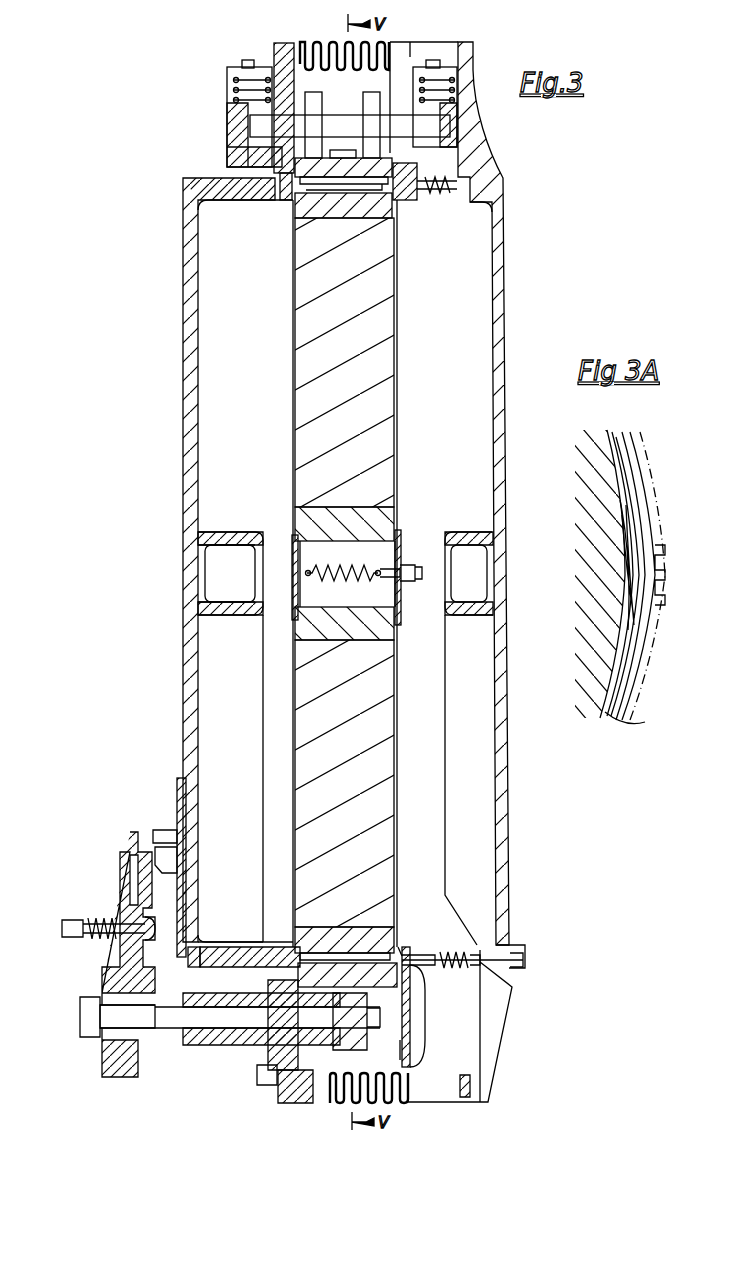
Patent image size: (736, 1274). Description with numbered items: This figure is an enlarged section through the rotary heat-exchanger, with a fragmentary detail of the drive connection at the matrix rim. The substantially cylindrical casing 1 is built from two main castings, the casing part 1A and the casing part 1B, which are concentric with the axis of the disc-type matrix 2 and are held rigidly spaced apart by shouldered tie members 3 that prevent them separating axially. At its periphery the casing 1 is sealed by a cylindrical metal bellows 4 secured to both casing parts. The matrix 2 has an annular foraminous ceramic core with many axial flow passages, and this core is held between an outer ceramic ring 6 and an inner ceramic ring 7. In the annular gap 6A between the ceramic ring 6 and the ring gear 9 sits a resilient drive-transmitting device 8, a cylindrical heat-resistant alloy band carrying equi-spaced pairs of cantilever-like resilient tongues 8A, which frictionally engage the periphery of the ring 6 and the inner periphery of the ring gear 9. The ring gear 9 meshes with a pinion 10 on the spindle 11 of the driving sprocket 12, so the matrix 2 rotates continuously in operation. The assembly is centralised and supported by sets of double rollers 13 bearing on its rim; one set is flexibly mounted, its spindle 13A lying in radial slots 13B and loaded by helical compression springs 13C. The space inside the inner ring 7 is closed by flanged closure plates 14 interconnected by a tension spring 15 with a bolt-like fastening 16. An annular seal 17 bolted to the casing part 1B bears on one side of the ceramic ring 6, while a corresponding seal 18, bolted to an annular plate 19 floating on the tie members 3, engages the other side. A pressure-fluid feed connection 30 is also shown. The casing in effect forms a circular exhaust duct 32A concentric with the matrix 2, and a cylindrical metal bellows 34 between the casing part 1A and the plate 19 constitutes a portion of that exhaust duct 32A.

In FIG. 3, the casing 1 is at (340, 493).
In FIG. 3, the casing part 1A is at (498, 225).
In FIG. 3, the casing part 1B is at (174, 241).
In FIG. 3, the disc-type matrix 2 is at (360, 300).
In FIG. 3, the shouldered tie members 3 is at (354, 572).
In FIG. 3, the cylindrical metal bellows 4 is at (415, 1088).
In FIG. 3, the ceramic ring 6 is at (312, 203).
In FIG. 3A, the ceramic ring 6 is at (578, 460).
In FIG. 3, the annular gap 6A is at (310, 163).
In FIG. 3A, the annular gap 6A is at (640, 722).
In FIG. 3, the ceramic ring 7 is at (378, 516).
In FIG. 3, the resilient drive-transmitting device 8 is at (300, 225).
In FIG. 3A, the resilient drive-transmitting device 8 is at (637, 632).
In FIG. 3A, the resilient tongues 8A is at (628, 520).
In FIG. 3, the ring gear 9 is at (336, 150).
In FIG. 3A, the ring gear 9 is at (640, 470).
In FIG. 3, the pinion 10 is at (352, 1050).
In FIG. 3, the spindle 11 is at (225, 1022).
In FIG. 3, the driving sprocket 12 is at (133, 834).
In FIG. 3, the double rollers 13 is at (327, 90).
In FIG. 3, the spindle 13A is at (262, 78).
In FIG. 3, the radial slots 13B is at (277, 145).
In FIG. 3, the helical compression springs 13C is at (267, 120).
In FIG. 3, the flanged closure plates 14 is at (292, 552).
In FIG. 3, the tension spring 15 is at (345, 572).
In FIG. 3, the bolt-like fastening 16 is at (374, 584).
In FIG. 3, the annular seal 17 is at (290, 203).
In FIG. 3, the seal 18 is at (400, 190).
In FIG. 3, the annular plate 19 is at (405, 170).
In FIG. 3, the pressure-fluid feed connection 30 is at (164, 828).
In FIG. 3, the exhaust duct 32A is at (216, 938).
In FIG. 3, the cylindrical metal bellows 34 is at (452, 955).